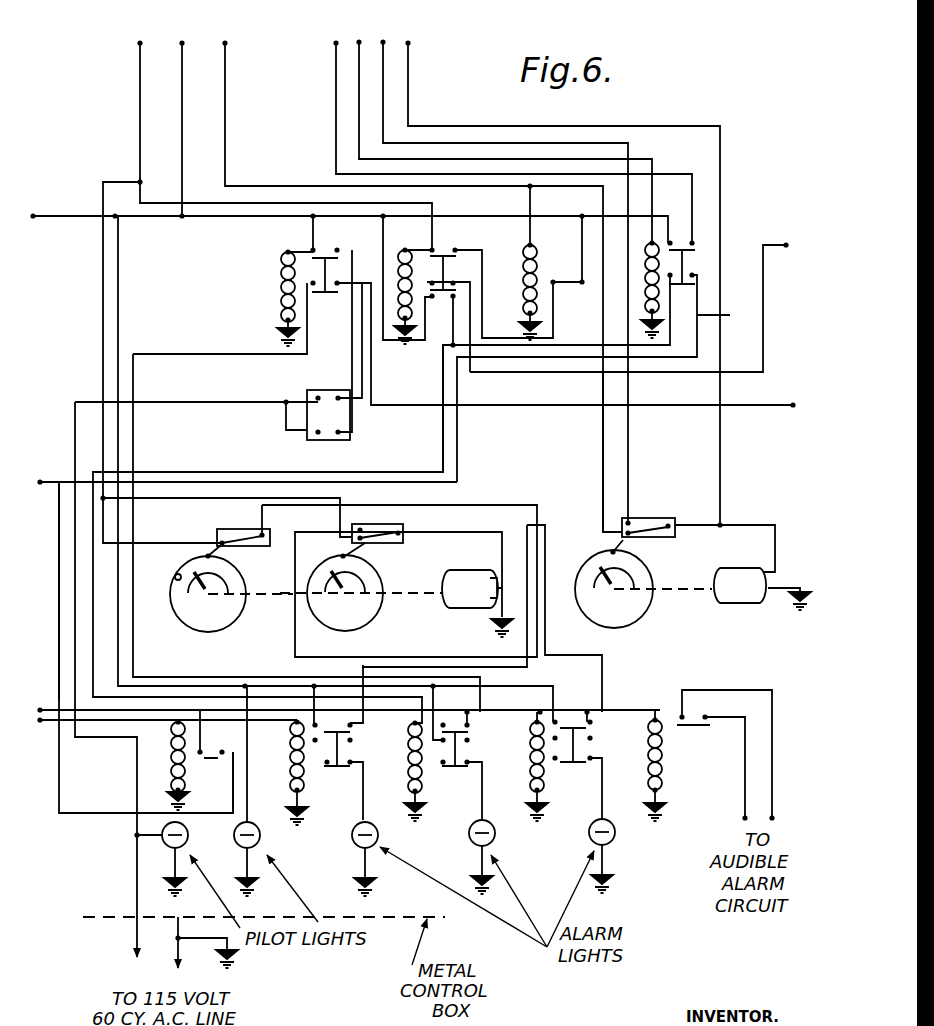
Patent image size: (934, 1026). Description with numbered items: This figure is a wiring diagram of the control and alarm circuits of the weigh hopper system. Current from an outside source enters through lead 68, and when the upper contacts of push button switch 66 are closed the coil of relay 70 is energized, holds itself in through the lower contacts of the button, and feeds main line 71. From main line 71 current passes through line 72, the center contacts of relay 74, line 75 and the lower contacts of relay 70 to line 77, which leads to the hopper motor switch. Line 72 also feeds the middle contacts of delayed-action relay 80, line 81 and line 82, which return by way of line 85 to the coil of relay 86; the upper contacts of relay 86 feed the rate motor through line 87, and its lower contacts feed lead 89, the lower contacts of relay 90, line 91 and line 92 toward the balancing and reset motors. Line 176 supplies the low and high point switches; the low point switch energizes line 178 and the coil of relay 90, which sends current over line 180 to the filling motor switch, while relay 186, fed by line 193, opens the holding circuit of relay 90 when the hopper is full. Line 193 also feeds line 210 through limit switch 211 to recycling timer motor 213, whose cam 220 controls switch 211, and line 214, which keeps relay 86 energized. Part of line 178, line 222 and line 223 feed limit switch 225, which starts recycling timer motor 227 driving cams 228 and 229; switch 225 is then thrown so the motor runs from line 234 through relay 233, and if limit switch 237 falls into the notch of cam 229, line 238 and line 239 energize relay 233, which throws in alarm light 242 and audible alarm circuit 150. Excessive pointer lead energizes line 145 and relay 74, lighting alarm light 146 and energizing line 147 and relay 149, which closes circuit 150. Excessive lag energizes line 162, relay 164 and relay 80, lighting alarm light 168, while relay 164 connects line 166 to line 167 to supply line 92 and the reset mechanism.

The line 178 is at (148, 30).
The line 176 is at (200, 30).
The line 193 is at (262, 28).
The line 87 is at (334, 41).
The line 85 is at (360, 40).
The line 82 is at (384, 40).
The line 214 is at (410, 43).
The line 222 is at (129, 166).
The main line 71 is at (77, 200).
The line 72 is at (119, 308).
The relay 70 is at (280, 297).
The line 75 is at (227, 348).
The lead 68 is at (240, 388).
The push button switch 66 is at (320, 390).
The lead 89 is at (380, 232).
The relay 90 is at (404, 250).
The line 91 is at (448, 346).
The relay 186 is at (528, 268).
The relay 86 is at (640, 300).
The line 92 is at (51, 470).
The line 180 is at (786, 236).
The line 77 is at (791, 405).
The line 166 is at (443, 441).
The line 210 is at (603, 436).
The line 223 is at (341, 497).
The line 239 is at (507, 492).
The line 81 is at (546, 522).
The limit switch 237 is at (217, 534).
The line 238 is at (196, 549).
The limit switch 225 is at (400, 543).
The cam 229 is at (240, 618).
The cam 228 is at (378, 620).
The recycling timer motor 227 is at (470, 606).
The limit switch 211 is at (676, 536).
The timer motor cam 220 is at (646, 613).
The recycling timer motor 213 is at (740, 604).
The line 234 is at (304, 668).
The line 145 is at (58, 702).
The line 162 is at (47, 727).
The relay 164 is at (184, 780).
The line 167 is at (82, 813).
The delayed-action relay 80 is at (290, 752).
The relay 74 is at (407, 779).
The relay 233 is at (530, 748).
The line 147 is at (617, 710).
The relay 149 is at (665, 757).
The audible alarm circuit 150 is at (803, 682).
The alarm light 168 is at (352, 845).
The alarm light 146 is at (496, 835).
The alarm light 242 is at (616, 838).